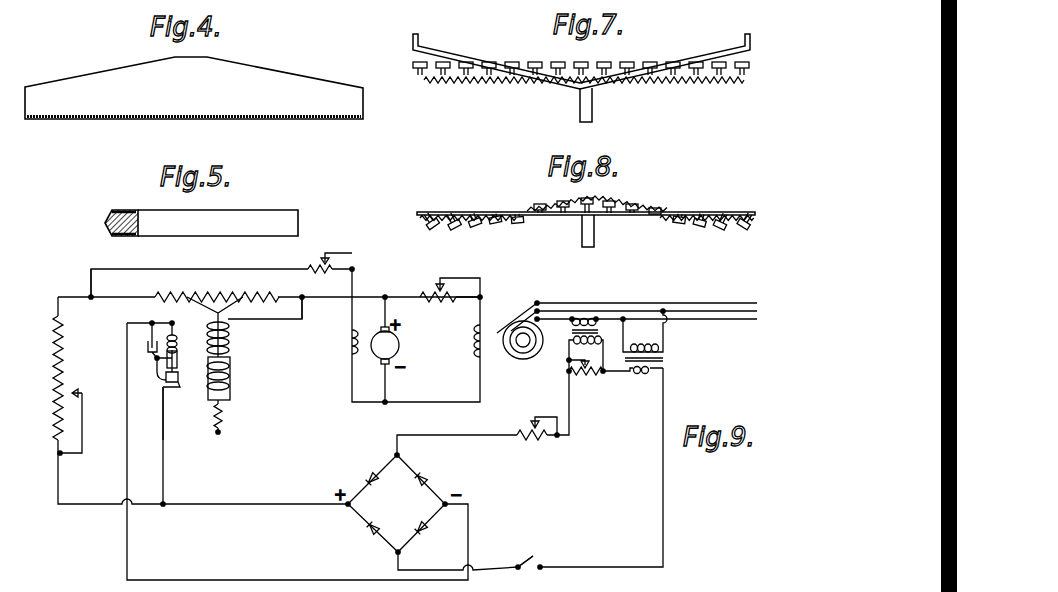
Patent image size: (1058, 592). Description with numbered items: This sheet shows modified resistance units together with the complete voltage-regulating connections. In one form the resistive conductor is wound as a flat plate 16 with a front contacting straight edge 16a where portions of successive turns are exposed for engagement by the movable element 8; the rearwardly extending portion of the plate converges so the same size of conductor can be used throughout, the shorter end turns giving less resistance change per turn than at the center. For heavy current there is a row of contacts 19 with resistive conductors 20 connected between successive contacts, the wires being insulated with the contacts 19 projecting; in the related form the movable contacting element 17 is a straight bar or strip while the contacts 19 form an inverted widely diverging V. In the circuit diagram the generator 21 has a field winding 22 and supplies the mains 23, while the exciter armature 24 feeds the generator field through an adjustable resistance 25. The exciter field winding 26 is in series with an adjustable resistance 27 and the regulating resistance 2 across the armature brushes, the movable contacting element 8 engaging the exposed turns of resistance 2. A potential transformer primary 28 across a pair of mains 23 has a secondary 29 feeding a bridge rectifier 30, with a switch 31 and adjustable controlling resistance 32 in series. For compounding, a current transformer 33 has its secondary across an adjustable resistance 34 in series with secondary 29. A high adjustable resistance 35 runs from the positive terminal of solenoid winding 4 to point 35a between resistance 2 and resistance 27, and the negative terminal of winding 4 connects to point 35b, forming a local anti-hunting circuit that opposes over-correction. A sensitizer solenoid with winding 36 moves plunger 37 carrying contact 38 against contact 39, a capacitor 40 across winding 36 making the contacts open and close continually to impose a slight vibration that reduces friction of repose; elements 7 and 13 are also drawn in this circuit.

In FIG. 9, the regulating resistance 2 is at (232, 294).
In FIG. 9, the solenoid winding 4 is at (231, 346).
In FIG. 9, the solenoid 7 is at (232, 394).
In FIG. 7, the movable contacting element 8 is at (715, 57).
In FIG. 9, the movable contacting element 8 is at (200, 309).
In FIG. 9, the resistor 13 is at (225, 414).
In FIG. 4, the flat plate 16 is at (103, 80).
In FIG. 5, the flat plate 16 is at (154, 222).
In FIG. 4, the front contacting straight edge 16a is at (101, 121).
In FIG. 5, the front contacting straight edge 16a is at (105, 222).
In FIG. 8, the movable contacting element 17 is at (577, 218).
In FIG. 7, the contacts 19 is at (563, 62).
In FIG. 8, the contacts 19 is at (516, 219).
In FIG. 7, the resistive conductors 20 is at (521, 81).
In FIG. 8, the resistive conductors 20 is at (532, 203).
In FIG. 9, the generator 21 is at (516, 361).
In FIG. 9, the field winding 22 is at (473, 346).
In FIG. 9, the mains 23 is at (713, 308).
In FIG. 9, the armature 24 is at (394, 340).
In FIG. 9, the adjustable resistance 25 is at (435, 291).
In FIG. 9, the field winding 26 is at (348, 346).
In FIG. 9, the adjustable resistance 27 is at (311, 266).
In FIG. 9, the primary 28 is at (644, 335).
In FIG. 9, the secondary 29 is at (633, 389).
In FIG. 9, the rectifier 30 is at (430, 487).
In FIG. 9, the switch 31 is at (528, 562).
In FIG. 9, the adjustable controlling resistance 32 is at (528, 432).
In FIG. 9, the current transformer 33 is at (571, 335).
In FIG. 9, the adjustable resistance 34 is at (586, 384).
In FIG. 9, the adjustable resistance 35 is at (42, 378).
In FIG. 9, the point 35a is at (90, 295).
In FIG. 9, the point 35b is at (303, 300).
In FIG. 9, the winding 36 is at (178, 346).
In FIG. 9, the plunger 37 is at (182, 364).
In FIG. 9, the contact 38 is at (174, 389).
In FIG. 9, the contact 39 is at (164, 373).
In FIG. 9, the capacitor 40 is at (147, 345).